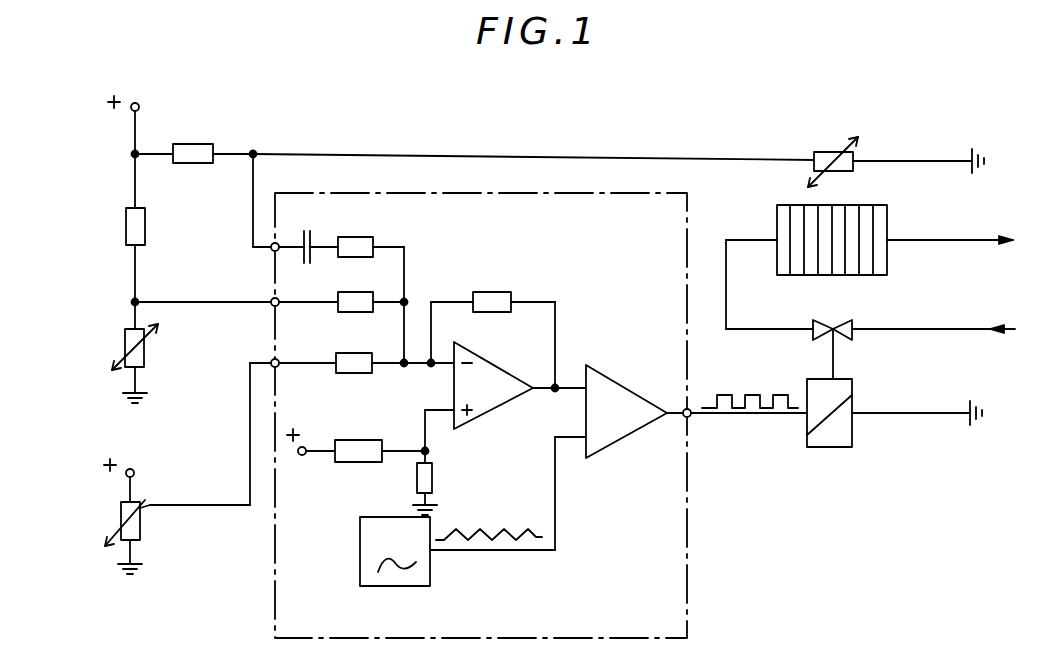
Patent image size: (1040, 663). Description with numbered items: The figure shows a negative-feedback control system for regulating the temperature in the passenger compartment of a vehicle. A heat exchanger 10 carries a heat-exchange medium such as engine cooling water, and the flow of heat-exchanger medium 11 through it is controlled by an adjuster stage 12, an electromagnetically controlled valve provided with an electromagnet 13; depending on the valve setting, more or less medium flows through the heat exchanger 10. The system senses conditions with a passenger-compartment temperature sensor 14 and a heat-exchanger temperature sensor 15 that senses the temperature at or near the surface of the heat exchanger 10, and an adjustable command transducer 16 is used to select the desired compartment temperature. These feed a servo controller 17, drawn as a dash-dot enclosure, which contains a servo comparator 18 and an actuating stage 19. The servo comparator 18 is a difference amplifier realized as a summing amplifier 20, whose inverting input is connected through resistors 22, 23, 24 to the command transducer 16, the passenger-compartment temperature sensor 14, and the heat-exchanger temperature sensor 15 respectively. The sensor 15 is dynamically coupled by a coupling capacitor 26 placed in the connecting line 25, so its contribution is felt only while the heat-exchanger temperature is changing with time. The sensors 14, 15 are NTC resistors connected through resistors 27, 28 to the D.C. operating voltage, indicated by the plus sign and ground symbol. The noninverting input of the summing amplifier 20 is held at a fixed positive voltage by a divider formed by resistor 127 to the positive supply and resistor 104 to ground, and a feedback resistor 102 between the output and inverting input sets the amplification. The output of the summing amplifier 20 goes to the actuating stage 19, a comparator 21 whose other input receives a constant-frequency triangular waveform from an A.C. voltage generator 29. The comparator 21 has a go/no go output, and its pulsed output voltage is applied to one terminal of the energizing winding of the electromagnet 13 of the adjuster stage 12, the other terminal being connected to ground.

The heat exchanger 10 is at (887, 205).
The flow of heat-exchanger medium 11 is at (935, 328).
The adjuster stage 12 is at (842, 360).
The electromagnet 13 is at (837, 440).
The passenger-compartment temperature sensor 14 is at (125, 338).
The heat-exchanger temperature sensor 15 is at (848, 125).
The adjustable command transducer 16 is at (121, 507).
The servo controller 17 is at (675, 607).
The servo comparator 18 is at (496, 376).
The actuating stage 19 is at (626, 416).
The summing amplifier 20 is at (495, 398).
The comparator 21 is at (617, 433).
The resistor 22 is at (352, 372).
The resistor 23 is at (350, 310).
The resistor 24 is at (362, 242).
The connecting line 25 is at (253, 208).
The coupling capacitor 26 is at (308, 231).
The resistor 27 is at (126, 229).
The resistor 28 is at (193, 143).
The A.C. voltage generator 29 is at (360, 543).
The feedback resistor 102 is at (493, 303).
The resistor 104 is at (433, 478).
The resistor 127 is at (386, 421).